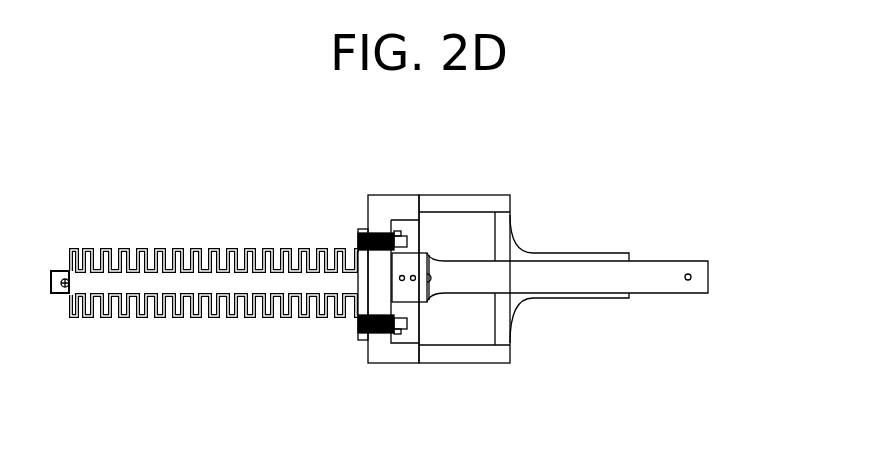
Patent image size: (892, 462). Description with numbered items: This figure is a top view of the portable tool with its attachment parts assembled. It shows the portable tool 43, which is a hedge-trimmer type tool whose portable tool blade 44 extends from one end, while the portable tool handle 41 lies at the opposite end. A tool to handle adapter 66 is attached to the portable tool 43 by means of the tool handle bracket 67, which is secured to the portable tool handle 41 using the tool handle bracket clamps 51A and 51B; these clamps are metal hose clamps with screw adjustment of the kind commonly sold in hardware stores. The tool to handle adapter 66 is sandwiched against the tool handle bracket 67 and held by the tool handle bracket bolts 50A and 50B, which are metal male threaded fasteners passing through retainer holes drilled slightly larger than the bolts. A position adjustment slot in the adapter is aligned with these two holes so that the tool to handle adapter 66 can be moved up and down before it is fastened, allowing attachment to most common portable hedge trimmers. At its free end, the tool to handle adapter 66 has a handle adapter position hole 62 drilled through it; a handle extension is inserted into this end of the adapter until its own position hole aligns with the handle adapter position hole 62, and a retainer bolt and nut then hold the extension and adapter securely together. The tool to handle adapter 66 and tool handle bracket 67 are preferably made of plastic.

The portable tool handle 41 is at (367, 195).
The portable tool 43 is at (520, 240).
The portable tool blade 44 is at (97, 248).
The tool handle bracket bolt 50A is at (403, 283).
The tool handle bracket bolt 50B is at (415, 283).
The tool handle bracket clamp 51A is at (357, 331).
The tool handle bracket clamp 51B is at (358, 236).
The handle adapter position hole 62 is at (693, 273).
The tool to handle adapter 66 is at (668, 259).
The tool handle bracket 67 is at (425, 253).